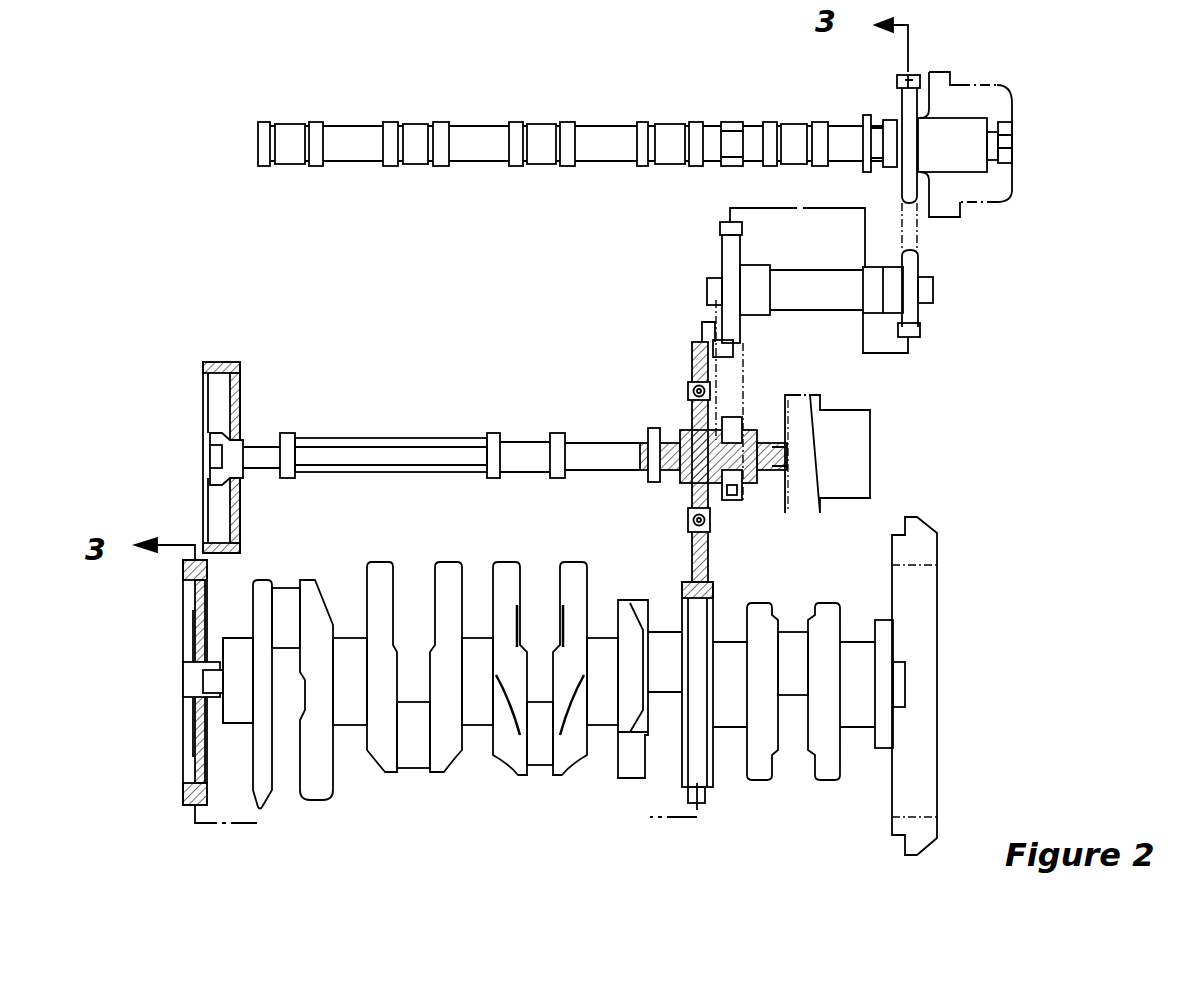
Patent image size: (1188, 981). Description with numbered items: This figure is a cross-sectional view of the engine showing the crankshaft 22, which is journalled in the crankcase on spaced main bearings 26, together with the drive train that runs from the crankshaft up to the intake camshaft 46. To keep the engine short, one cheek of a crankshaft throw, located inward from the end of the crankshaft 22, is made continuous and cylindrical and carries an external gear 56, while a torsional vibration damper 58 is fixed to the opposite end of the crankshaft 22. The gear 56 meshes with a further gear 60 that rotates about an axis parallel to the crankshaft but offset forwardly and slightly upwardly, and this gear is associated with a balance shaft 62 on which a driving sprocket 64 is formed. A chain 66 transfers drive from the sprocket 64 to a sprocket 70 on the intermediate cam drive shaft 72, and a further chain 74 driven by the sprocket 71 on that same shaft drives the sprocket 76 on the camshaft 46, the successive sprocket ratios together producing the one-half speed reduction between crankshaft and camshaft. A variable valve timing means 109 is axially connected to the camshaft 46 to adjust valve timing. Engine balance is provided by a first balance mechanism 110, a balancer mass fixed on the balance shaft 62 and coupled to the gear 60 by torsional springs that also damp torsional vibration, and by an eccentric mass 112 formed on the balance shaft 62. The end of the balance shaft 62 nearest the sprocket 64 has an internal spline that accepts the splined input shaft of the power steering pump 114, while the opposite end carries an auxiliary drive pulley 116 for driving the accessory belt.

The crankshaft 22 is at (477, 725).
The main bearings 26 is at (237, 713).
The intake camshaft 46 is at (607, 122).
The external gear 56 is at (700, 803).
The torsional vibration damper 58 is at (182, 630).
The gear 60 is at (700, 340).
The balance shaft 62 is at (518, 440).
The driving sprocket 64 is at (733, 500).
The chain 66 is at (745, 395).
The sprocket 70 is at (742, 224).
The sprocket 71 is at (913, 337).
The intermediate cam drive shaft 72 is at (807, 302).
The chain 74 is at (918, 240).
The sprocket 76 is at (895, 73).
The variable valve timing means 109 is at (1013, 108).
The first balance mechanism 110 is at (688, 380).
The eccentric mass 112 is at (398, 442).
The power steering pump 114 is at (872, 418).
The auxiliary drive pulley 116 is at (237, 400).